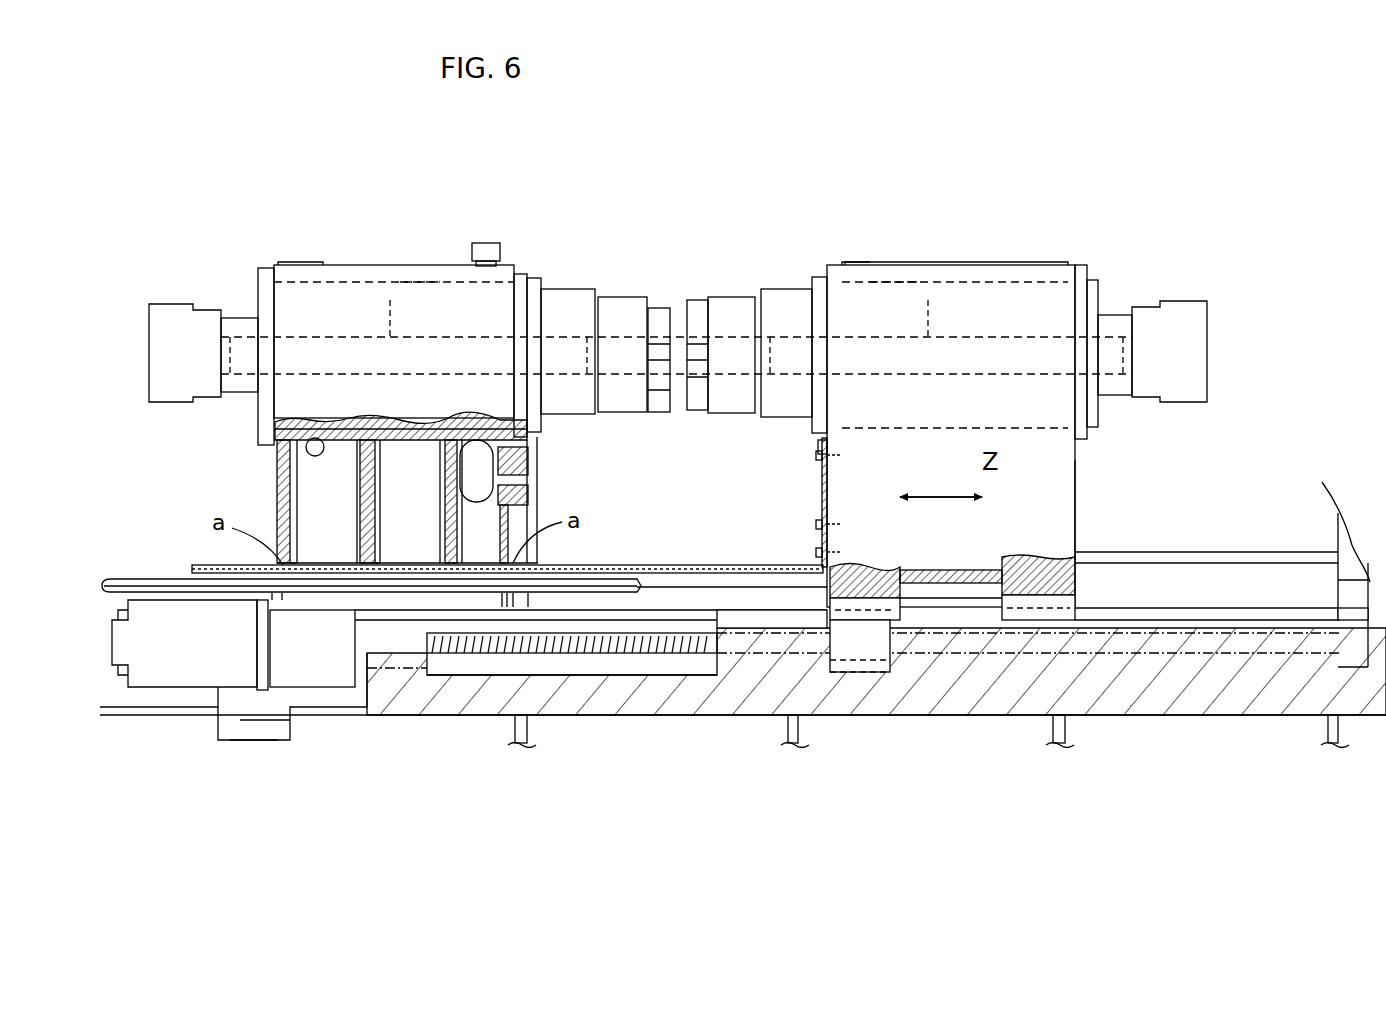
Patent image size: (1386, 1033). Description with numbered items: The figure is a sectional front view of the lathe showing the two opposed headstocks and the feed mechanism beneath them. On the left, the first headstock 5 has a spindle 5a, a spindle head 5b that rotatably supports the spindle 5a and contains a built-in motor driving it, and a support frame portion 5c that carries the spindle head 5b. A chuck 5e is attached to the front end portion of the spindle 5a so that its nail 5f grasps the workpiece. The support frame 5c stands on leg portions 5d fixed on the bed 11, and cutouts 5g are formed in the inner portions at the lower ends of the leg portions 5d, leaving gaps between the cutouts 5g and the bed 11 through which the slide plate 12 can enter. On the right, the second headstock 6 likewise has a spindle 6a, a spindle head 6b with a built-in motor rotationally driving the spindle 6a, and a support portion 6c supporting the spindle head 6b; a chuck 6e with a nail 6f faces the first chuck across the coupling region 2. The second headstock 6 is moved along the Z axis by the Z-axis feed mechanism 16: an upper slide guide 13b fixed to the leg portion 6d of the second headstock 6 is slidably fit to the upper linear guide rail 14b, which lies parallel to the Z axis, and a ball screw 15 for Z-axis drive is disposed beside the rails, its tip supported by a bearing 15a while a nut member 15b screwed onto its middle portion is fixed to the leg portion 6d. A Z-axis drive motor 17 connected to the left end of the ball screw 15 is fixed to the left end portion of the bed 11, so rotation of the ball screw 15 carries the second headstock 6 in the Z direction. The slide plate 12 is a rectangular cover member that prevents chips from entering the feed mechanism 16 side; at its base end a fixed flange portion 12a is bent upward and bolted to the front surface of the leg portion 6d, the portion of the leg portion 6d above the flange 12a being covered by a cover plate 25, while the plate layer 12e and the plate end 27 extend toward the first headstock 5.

The coupling 2 is at (668, 222).
The first headstock 5 is at (362, 256).
The spindle 5a is at (390, 338).
The spindle head 5b is at (418, 280).
The support frame portion 5c is at (445, 265).
The leg portions 5d is at (365, 483).
The chuck 5e is at (612, 297).
The nail 5f is at (660, 308).
The cutouts 5g is at (357, 565).
The second headstock 6 is at (985, 243).
The spindle 6a is at (928, 325).
The spindle head 6b is at (895, 283).
The support portion 6c is at (845, 265).
The leg portion 6d is at (1075, 500).
The chuck 6e is at (735, 297).
The nail 6f is at (700, 300).
The bed 11 is at (883, 716).
The slide plate 12 is at (670, 560).
The fixed flange portion 12a is at (818, 552).
The plate upper layer 12e is at (200, 566).
The upper slide guide 13b is at (855, 616).
The upper linear guide rail 14b is at (785, 622).
The ball screw 15 is at (600, 656).
The bearing 15a is at (1307, 683).
The nut member 15b is at (905, 700).
The Z-axis feed mechanism 16 is at (730, 604).
The Z-axis drive motor 17 is at (175, 680).
The cover plate 25 is at (820, 478).
The plate end 27 is at (120, 578).